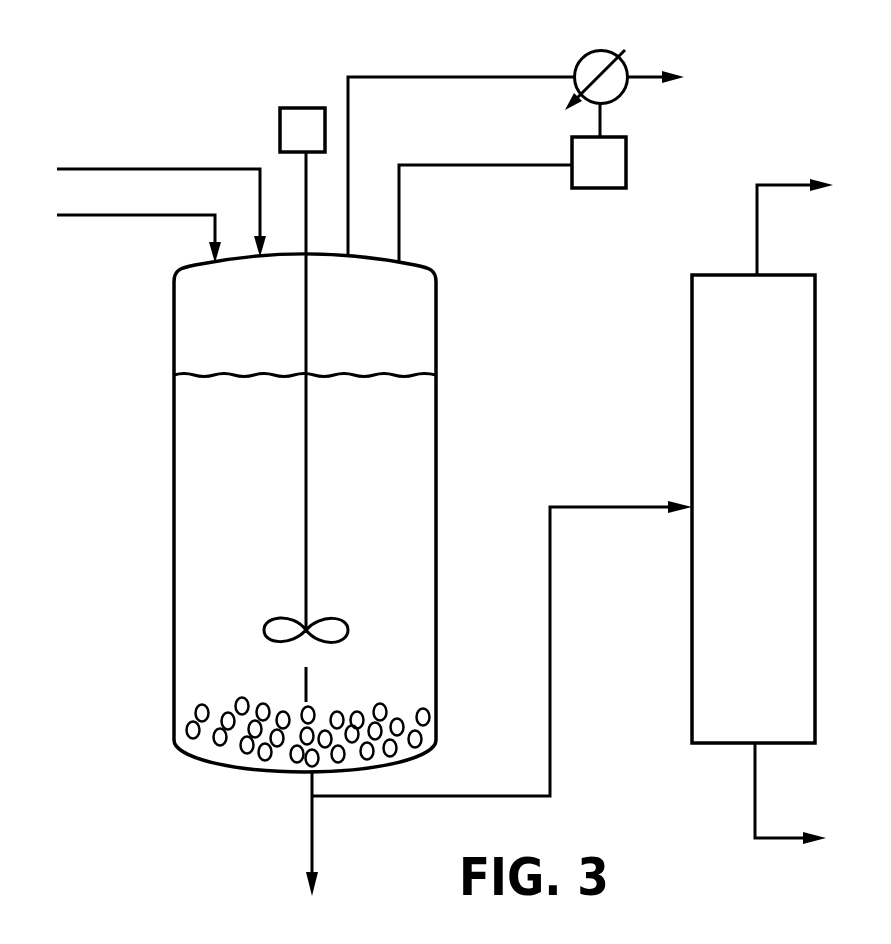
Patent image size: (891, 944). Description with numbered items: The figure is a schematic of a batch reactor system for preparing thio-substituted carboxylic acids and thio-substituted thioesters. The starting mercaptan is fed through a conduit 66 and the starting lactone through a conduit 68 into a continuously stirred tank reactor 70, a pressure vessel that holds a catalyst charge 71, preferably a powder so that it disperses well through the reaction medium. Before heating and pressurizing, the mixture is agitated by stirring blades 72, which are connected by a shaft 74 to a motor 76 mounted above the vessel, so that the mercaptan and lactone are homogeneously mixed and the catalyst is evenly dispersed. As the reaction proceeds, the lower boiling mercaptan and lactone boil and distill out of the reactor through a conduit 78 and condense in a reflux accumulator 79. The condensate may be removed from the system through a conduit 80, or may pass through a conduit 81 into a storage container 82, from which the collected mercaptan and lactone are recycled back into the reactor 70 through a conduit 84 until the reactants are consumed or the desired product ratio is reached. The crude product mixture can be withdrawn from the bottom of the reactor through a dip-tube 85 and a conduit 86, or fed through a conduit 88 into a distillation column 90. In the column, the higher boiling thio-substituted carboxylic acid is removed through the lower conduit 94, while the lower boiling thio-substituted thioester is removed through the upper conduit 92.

The conduit 66 is at (156, 167).
The conduit 68 is at (143, 213).
The continuously stirred tank reactor 70 is at (172, 454).
The catalyst charge 71 is at (240, 704).
The stirring blades 72 is at (268, 625).
The shaft 74 is at (304, 471).
The motor 76 is at (280, 134).
The conduit 78 is at (349, 118).
The reflux accumulator 79 is at (584, 58).
The conduit 80 is at (648, 80).
The conduit 81 is at (601, 120).
The storage container 82 is at (627, 163).
The conduit 84 is at (466, 166).
The dip-tube 85 is at (308, 684).
The conduit 86 is at (306, 814).
The conduit 88 is at (551, 644).
The distillation column 90 is at (816, 612).
The conduit 92 is at (758, 220).
The conduit 94 is at (756, 778).